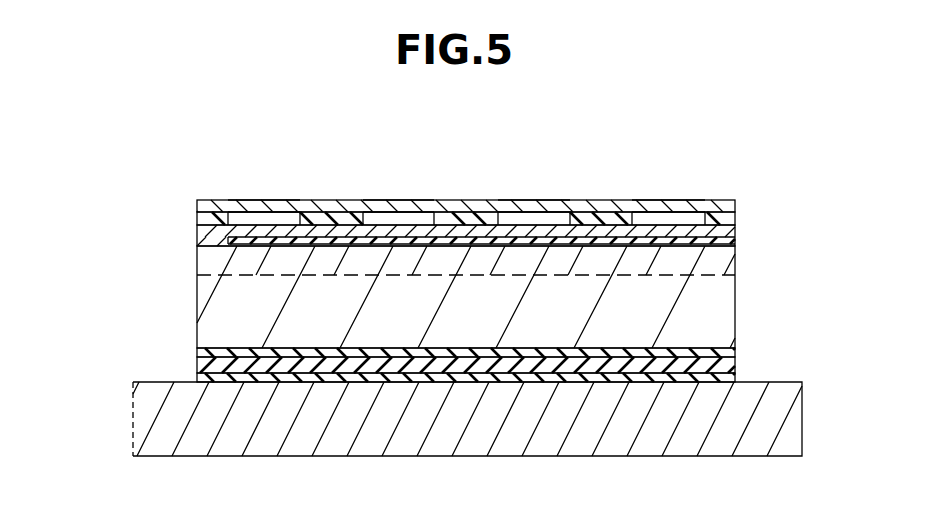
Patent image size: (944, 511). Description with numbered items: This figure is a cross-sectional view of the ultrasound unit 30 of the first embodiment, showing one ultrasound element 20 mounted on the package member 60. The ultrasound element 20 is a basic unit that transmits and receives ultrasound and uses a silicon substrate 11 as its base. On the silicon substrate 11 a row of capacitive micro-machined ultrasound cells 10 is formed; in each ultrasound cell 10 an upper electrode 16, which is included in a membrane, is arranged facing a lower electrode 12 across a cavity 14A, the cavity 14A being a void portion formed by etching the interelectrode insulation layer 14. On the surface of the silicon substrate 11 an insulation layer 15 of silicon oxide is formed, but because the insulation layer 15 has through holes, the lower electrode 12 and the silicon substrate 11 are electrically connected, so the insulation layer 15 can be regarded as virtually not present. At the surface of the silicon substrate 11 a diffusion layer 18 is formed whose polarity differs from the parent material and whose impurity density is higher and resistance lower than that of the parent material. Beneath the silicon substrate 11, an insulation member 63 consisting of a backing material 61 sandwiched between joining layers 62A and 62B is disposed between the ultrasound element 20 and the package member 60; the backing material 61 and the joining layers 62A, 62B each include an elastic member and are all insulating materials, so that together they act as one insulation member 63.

The display device 30 is at (134, 135).
The ultrasound element 20 is at (817, 113).
The upper electrode 16 is at (737, 206).
The interelectrode insulation layer 14 is at (737, 219).
The cavity 14A is at (262, 205).
The capacitive micro-machined ultrasound cell 10 is at (303, 158).
The lower electrode 12 is at (737, 233).
The insulation layer 15 is at (737, 241).
The silicon substrate 11 is at (737, 287).
The diffusion layer 18 is at (197, 262).
The insulation member 63 is at (88, 260).
The joining layer 62A is at (197, 352).
The backing material 61 is at (197, 365).
The joining layer 62B is at (197, 378).
The package member 60 is at (132, 420).